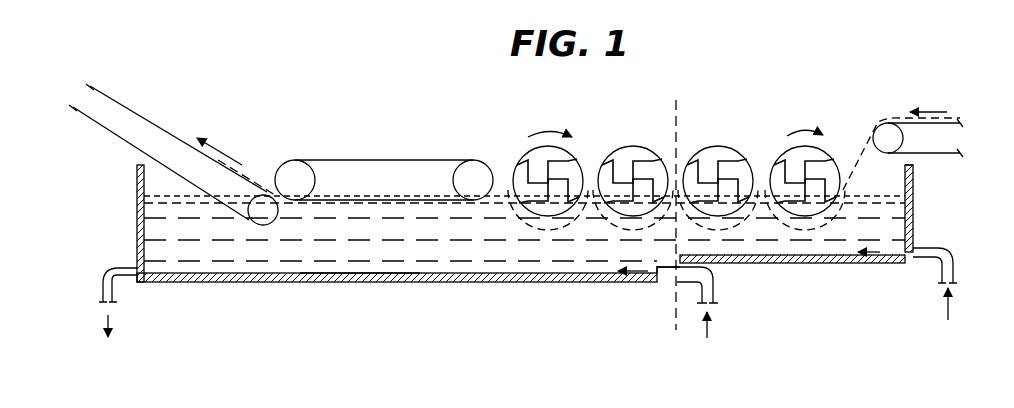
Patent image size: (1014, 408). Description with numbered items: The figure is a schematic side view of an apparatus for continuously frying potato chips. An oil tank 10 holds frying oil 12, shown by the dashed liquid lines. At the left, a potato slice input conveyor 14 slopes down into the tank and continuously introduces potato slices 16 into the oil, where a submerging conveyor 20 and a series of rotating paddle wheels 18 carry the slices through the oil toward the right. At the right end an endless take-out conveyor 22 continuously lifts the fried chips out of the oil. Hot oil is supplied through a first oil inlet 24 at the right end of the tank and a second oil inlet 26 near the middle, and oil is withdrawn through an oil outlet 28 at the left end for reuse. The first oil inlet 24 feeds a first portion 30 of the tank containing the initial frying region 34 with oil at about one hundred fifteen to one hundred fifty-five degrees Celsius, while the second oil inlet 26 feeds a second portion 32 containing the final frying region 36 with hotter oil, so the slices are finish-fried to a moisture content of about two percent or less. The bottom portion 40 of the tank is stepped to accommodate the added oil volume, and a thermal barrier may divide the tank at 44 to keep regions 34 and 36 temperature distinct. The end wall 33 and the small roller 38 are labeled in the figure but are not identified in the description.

The oil tank 10 is at (914, 242).
The frying oil 12 is at (910, 226).
The potato slice input conveyor 14 is at (945, 152).
The potato slices 16 is at (898, 120).
The rotating paddle wheels 18 is at (519, 160).
The submerging conveyor 20 is at (323, 160).
The endless take-out conveyor 22 is at (155, 125).
The first oil inlet 24 is at (955, 265).
The second oil inlet 26 is at (700, 284).
The oil outlet 28 is at (103, 282).
The first portion of the tank 30 is at (770, 268).
The second portion of the tank 32 is at (540, 262).
The end wall 33 is at (908, 197).
The initial frying region 34 is at (800, 232).
The final frying region 36 is at (600, 228).
The guide roller 38 is at (297, 217).
The bottom portion of the tank 40 is at (365, 274).
The thermal barrier location 44 is at (693, 222).